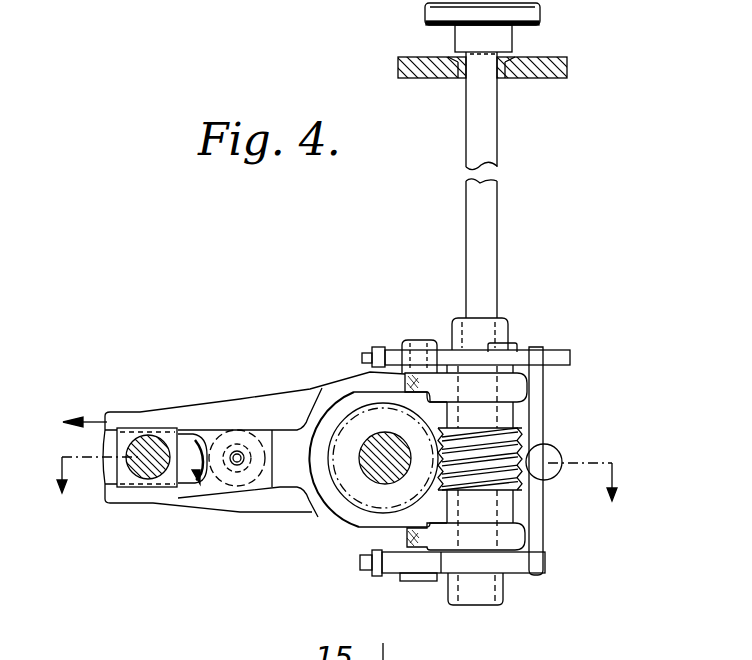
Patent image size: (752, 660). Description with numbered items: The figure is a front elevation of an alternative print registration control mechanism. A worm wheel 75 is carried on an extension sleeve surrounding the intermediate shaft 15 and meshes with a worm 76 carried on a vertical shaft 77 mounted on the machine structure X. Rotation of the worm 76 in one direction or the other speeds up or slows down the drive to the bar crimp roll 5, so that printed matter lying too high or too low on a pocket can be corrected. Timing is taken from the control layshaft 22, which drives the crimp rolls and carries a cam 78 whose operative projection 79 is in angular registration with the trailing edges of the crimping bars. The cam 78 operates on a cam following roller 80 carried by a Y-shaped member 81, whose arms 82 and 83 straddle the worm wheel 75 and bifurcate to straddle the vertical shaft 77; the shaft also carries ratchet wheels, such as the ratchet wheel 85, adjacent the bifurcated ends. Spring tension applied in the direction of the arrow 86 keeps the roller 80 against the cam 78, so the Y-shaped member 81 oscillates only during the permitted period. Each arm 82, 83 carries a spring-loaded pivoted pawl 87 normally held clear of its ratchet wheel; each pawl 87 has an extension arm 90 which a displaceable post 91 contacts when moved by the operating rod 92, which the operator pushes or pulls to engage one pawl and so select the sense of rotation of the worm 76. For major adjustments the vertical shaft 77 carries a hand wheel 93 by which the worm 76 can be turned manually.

The hand wheel 93 is at (430, 12).
The machine structure X is at (402, 67).
The vertical shaft 77 is at (475, 212).
The arm 82 is at (400, 378).
The pivoted pawl 87 is at (437, 572).
The extension arm 90 is at (557, 571).
The displaceable post 91 is at (545, 548).
The operating rod 92 is at (530, 460).
The worm 76 is at (522, 488).
The ratchet wheel 85 is at (505, 568).
The arm 83 is at (400, 547).
The intermediate shaft 15 is at (378, 435).
The worm wheel 75 is at (358, 500).
The Y-shaped member 81 is at (290, 470).
The cam following roller 80 is at (248, 430).
The operative projection 79 is at (199, 447).
The cam 78 is at (199, 480).
The control layshaft 22 is at (155, 442).
The arrow 86 is at (93, 420).
The bar crimp roll 5 is at (336, 464).